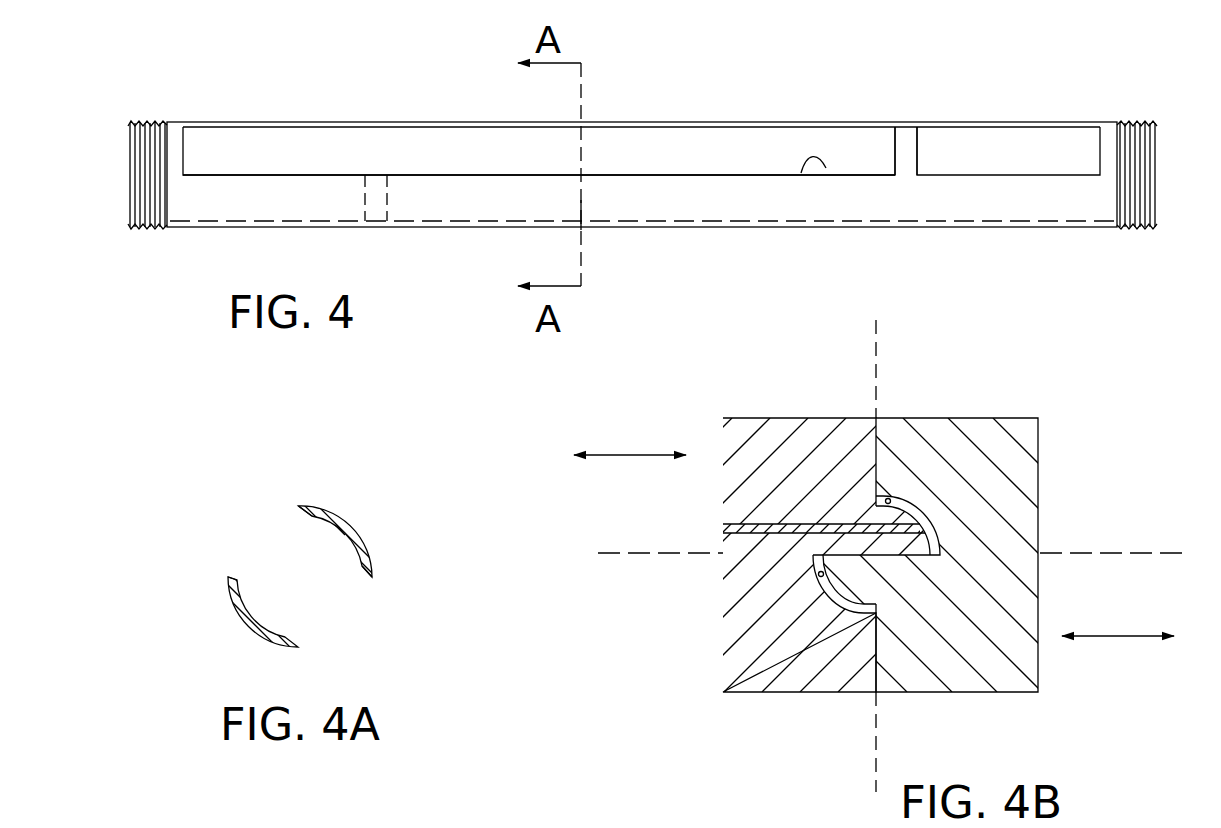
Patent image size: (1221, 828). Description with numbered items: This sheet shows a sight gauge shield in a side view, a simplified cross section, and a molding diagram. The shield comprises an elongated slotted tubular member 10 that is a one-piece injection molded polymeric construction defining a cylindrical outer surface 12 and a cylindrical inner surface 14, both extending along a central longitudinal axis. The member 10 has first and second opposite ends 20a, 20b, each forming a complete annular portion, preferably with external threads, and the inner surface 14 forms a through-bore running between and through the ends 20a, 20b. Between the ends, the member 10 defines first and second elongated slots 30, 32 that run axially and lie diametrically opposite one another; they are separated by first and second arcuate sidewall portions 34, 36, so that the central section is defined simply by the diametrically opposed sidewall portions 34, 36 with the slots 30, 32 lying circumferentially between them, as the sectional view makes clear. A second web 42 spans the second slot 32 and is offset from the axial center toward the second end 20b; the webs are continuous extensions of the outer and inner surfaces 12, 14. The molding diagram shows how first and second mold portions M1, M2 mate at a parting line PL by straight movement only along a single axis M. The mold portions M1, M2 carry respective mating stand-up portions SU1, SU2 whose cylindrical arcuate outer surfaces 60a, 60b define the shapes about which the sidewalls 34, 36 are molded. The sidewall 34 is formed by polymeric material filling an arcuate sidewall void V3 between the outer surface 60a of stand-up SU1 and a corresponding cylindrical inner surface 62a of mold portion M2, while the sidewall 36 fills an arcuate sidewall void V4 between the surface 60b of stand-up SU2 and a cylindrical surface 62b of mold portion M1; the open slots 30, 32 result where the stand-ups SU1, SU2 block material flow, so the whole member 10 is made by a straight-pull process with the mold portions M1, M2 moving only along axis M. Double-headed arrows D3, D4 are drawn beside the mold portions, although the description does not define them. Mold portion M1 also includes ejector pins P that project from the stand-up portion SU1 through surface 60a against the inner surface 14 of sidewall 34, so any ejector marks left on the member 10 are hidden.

In FIG. 4, the elongated slotted tubular member 10 is at (801, 96).
In FIG. 4, the cylindrical outer surface 12 is at (485, 200).
In FIG. 4A, the cylindrical outer surface 12 is at (371, 550).
In FIG. 4, the cylindrical inner surface 14 is at (330, 150).
In FIG. 4A, the cylindrical inner surface 14 is at (352, 542).
In FIG. 4, the first end 20a is at (171, 231).
In FIG. 4, the second end 20b is at (1109, 231).
In FIG. 4A, the first elongated slot 30 is at (300, 641).
In FIG. 4, the second elongated slot 32 is at (826, 168).
In FIG. 4A, the second elongated slot 32 is at (300, 508).
In FIG. 4, the first sidewall portion 34 is at (685, 120).
In FIG. 4A, the first sidewall portion 34 is at (368, 518).
In FIG. 4, the second sidewall portion 36 is at (700, 184).
In FIG. 4A, the second sidewall portion 36 is at (241, 624).
In FIG. 4, the second web 42 is at (904, 148).
In FIG. 4B, the first mold portion M1 is at (800, 416).
In FIG. 4B, the second mold portion M2 is at (983, 696).
In FIG. 4B, the single axis M is at (1145, 553).
In FIG. 4B, the parting line PL is at (877, 348).
In FIG. 4B, the ejector pins P is at (803, 524).
In FIG. 4B, the cylindrical arcuate outer surface of first stand-up portion 60a is at (903, 498).
In FIG. 4B, the cylindrical arcuate outer surface of second stand-up portion 60b is at (862, 614).
In FIG. 4B, the cylindrical inner surface of second mold portion 62a is at (888, 497).
In FIG. 4B, the cylindrical surface of first mold portion 62b is at (818, 581).
In FIG. 4B, the arcuate sidewall void V3 is at (920, 526).
In FIG. 4B, the arcuate sidewall void V4 is at (846, 607).
In FIG. 4B, the first mating stand-up portion SU1 is at (925, 543).
In FIG. 4B, the second mating stand-up portion SU2 is at (838, 586).
In FIG. 4B, the third direction D3 is at (634, 453).
In FIG. 4B, the fourth direction D4 is at (1110, 638).